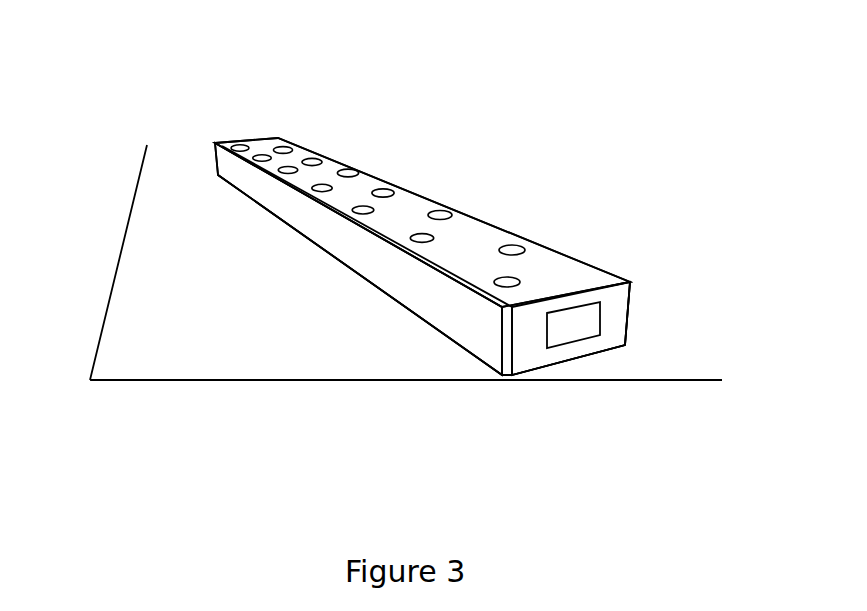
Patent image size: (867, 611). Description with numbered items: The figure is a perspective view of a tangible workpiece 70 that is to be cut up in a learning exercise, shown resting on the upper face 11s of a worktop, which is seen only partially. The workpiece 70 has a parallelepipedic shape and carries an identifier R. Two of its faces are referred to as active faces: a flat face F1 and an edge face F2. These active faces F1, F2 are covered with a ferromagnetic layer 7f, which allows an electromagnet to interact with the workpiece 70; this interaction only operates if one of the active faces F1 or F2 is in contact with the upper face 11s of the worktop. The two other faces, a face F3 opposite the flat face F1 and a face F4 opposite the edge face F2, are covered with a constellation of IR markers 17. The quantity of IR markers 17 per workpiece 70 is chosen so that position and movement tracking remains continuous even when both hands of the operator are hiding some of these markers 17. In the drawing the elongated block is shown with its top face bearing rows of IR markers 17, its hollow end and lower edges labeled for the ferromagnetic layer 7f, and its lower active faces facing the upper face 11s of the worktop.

The tangible workpiece 70 is at (478, 249).
The IR markers 17 is at (345, 176).
The flat face F1 is at (547, 360).
The edge face F2 is at (467, 325).
The face opposite the flat face F3 is at (558, 285).
The face opposite the edge face F4 is at (632, 305).
The identifier R is at (590, 330).
The ferromagnetic layer 7f is at (330, 240).
The upper face of the worktop 11s is at (188, 367).